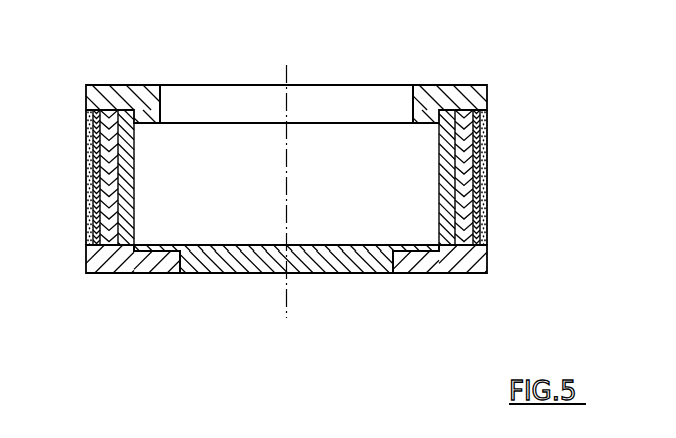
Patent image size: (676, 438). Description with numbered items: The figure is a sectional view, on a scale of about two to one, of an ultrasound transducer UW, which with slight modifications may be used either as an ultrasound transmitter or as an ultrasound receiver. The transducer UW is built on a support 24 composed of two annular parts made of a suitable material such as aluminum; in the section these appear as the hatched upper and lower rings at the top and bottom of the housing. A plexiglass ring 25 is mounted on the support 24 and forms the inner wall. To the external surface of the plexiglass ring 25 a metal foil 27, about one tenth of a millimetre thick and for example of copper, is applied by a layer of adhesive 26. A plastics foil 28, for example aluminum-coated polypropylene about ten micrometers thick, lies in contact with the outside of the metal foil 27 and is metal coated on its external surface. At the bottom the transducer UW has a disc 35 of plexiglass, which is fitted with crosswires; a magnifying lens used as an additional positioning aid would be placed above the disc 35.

The ultrasound transducer UW is at (169, 80).
The support 24 is at (427, 122).
The plexiglass ring 25 is at (122, 174).
The layer of adhesive 26 is at (488, 197).
The metal foil 27 is at (88, 190).
The plastics foil 28 is at (88, 162).
The disc 35 is at (262, 265).